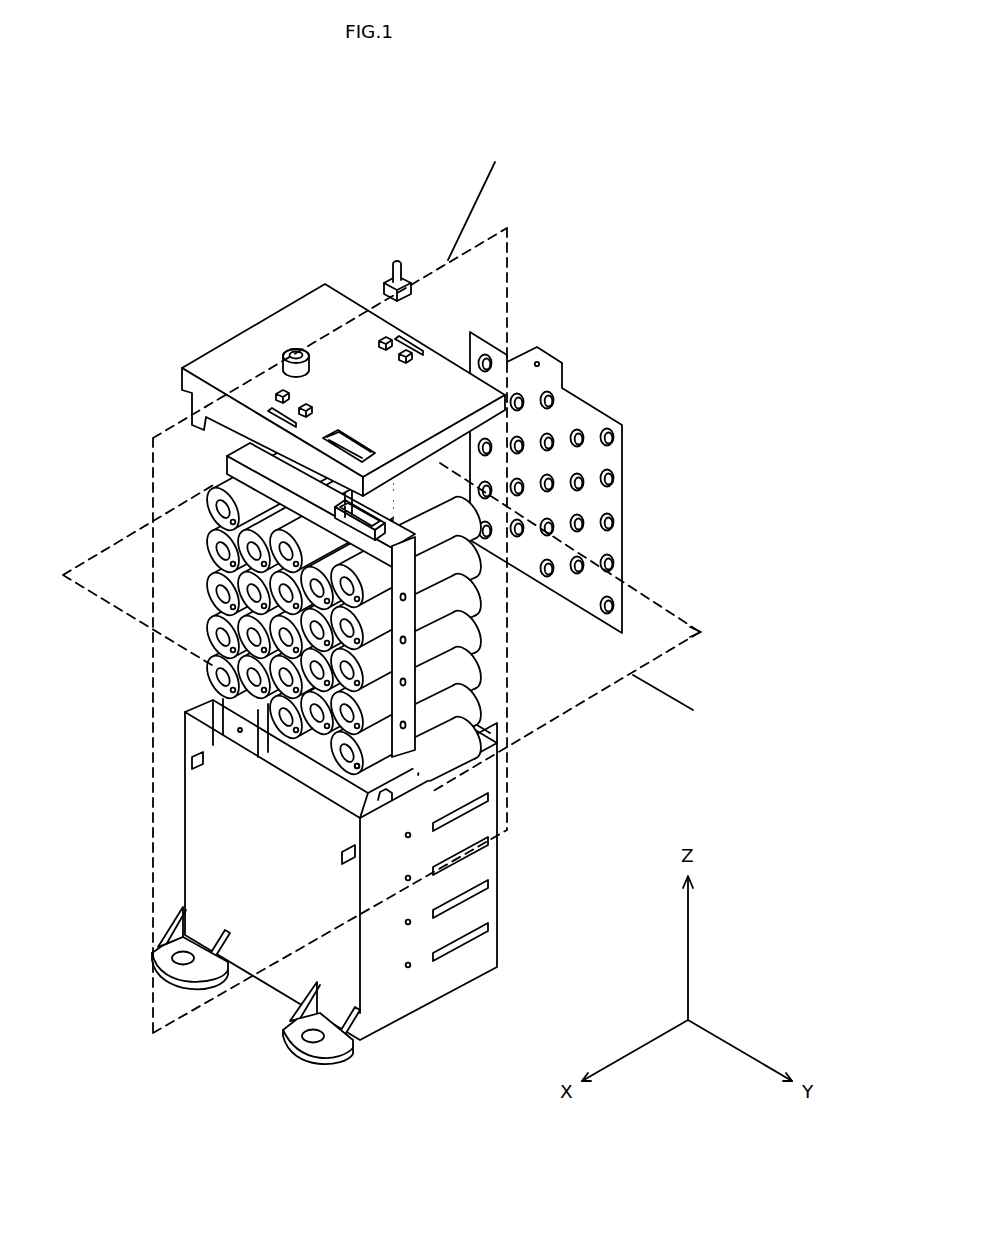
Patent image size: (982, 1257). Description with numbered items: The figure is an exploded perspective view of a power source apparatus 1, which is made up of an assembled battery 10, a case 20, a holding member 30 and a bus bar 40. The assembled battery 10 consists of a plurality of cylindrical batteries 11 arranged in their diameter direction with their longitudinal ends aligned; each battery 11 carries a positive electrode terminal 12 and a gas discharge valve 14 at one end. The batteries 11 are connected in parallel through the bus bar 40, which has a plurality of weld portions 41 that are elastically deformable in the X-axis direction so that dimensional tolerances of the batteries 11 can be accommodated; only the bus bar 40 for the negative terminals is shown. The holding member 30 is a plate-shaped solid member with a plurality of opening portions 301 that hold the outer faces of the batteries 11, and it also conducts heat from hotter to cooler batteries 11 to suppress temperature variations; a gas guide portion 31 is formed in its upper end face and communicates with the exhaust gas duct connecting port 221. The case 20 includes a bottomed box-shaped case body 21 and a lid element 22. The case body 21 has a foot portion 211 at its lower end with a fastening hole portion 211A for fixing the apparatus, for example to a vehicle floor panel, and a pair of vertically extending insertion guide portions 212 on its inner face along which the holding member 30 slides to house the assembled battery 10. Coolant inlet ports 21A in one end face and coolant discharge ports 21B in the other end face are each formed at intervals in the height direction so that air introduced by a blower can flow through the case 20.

The power source apparatus 1 is at (446, 614).
The assembled battery 10 is at (365, 730).
The battery 11 is at (392, 730).
The positive electrode terminal 12 is at (345, 773).
The gas discharge valve 14 is at (357, 768).
The case 20 is at (337, 654).
The case body 21 is at (337, 892).
The coolant inlet port 21A is at (300, 752).
The coolant discharge port 21B is at (466, 862).
The foot portion 211 is at (198, 1007).
The fastening hole portion 211A is at (185, 967).
The insertion guide portion 212 is at (270, 708).
The lid element 22 is at (343, 348).
The exhaust gas duct connecting port 221 is at (290, 353).
The holding member 30 is at (328, 600).
The opening portion 301 is at (406, 592).
The gas guide portion 31 is at (227, 487).
The bus bar 40 is at (595, 482).
The weld portion 41 is at (614, 437).